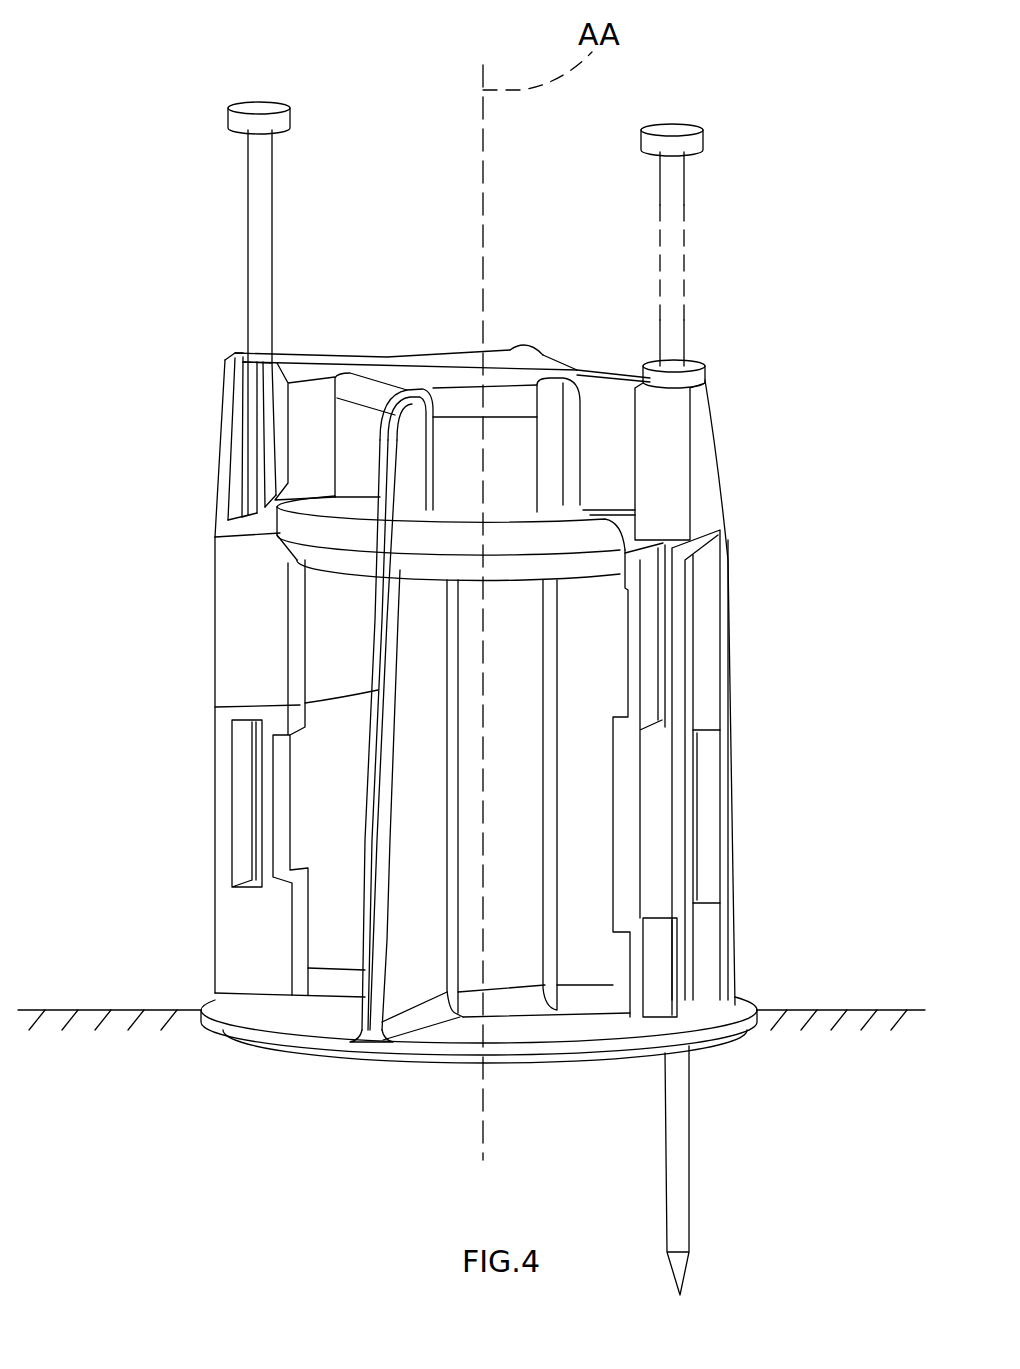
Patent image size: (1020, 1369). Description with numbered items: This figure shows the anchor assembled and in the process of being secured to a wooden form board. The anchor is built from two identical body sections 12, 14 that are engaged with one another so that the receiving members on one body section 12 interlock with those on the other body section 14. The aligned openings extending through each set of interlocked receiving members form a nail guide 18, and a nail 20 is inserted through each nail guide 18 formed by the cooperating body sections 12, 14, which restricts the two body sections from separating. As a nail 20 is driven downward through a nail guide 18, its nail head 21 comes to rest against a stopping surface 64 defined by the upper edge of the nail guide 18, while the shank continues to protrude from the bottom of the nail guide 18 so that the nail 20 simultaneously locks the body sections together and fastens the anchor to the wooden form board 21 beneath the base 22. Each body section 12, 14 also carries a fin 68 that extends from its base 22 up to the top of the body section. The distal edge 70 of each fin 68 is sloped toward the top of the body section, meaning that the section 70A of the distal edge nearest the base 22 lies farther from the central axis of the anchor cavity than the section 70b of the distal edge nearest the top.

The body section 12 is at (565, 350).
The body section 14 is at (326, 408).
The nail guide 18 is at (212, 632).
The nail 20 is at (268, 203).
The nail head 21 is at (260, 107).
The base 22 is at (238, 1044).
The stopping surface 64 is at (240, 353).
The fin 68 is at (409, 945).
The distal edge 70 is at (378, 691).
The section of the distal edge closest to the base 70A is at (367, 1045).
The section of the distal edge closest to the top 70b is at (407, 400).